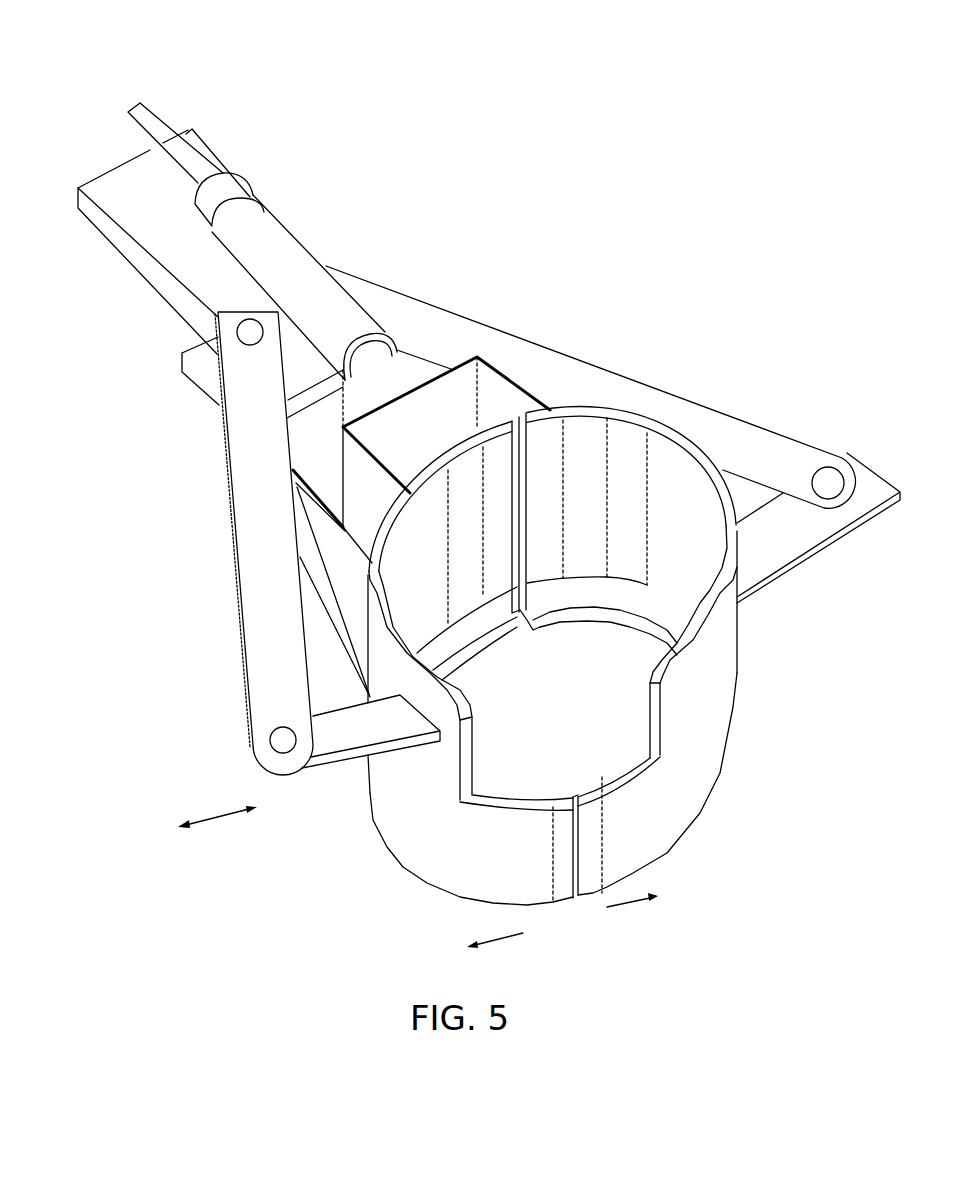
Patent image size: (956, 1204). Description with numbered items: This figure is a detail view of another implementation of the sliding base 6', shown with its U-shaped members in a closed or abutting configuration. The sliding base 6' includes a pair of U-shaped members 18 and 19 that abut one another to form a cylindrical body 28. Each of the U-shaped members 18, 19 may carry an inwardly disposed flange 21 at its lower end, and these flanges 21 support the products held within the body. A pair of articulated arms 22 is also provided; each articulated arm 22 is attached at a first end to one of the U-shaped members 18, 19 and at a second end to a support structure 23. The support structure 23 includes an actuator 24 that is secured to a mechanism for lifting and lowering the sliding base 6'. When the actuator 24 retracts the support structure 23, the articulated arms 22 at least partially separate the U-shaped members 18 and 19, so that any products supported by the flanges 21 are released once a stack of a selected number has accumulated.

The sliding base 6' is at (68, 46).
The U-shaped member 18 is at (417, 760).
The U-shaped member 19 is at (725, 620).
The inwardly disposed flange 21 is at (563, 617).
The articulated arms 22 is at (538, 357).
The support structure 23 is at (108, 181).
The actuator 24 is at (267, 213).
The cylindrical body 28 is at (410, 266).